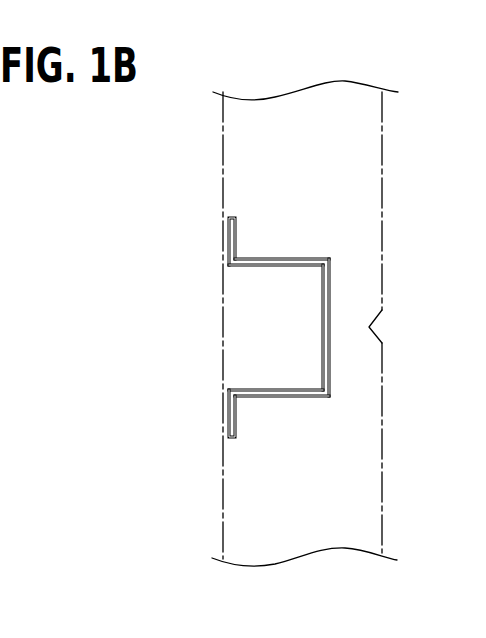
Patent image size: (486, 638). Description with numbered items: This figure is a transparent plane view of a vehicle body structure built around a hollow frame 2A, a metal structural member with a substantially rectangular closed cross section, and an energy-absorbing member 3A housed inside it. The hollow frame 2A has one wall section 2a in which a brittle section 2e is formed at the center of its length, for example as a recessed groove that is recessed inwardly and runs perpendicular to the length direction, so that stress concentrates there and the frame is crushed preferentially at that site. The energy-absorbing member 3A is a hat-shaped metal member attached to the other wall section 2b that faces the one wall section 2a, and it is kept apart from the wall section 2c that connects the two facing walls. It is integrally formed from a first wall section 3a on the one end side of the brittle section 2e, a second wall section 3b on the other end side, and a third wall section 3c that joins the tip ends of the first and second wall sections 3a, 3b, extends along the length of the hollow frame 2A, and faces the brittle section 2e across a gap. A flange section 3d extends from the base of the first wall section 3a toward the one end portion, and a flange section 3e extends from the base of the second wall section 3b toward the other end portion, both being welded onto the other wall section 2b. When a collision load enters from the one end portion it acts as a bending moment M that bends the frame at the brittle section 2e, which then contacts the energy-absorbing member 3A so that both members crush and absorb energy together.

The hollow frame 2A is at (403, 172).
The one wall section 2a is at (383, 229).
The other wall section 2b is at (228, 131).
The wall section 2c is at (328, 450).
The brittle section 2e is at (371, 327).
The energy-absorbing member 3A is at (218, 326).
The first wall section 3a is at (252, 266).
The second wall section 3b is at (252, 389).
The third wall section 3c is at (323, 327).
The flange section 3d is at (229, 241).
The flange section 3e is at (199, 413).
The bending moment M is at (360, 600).